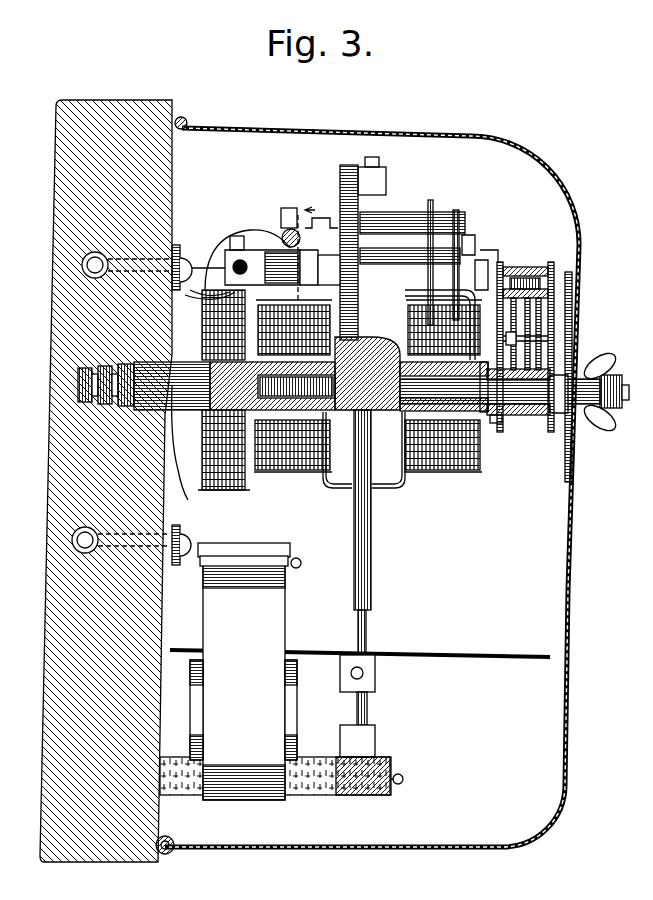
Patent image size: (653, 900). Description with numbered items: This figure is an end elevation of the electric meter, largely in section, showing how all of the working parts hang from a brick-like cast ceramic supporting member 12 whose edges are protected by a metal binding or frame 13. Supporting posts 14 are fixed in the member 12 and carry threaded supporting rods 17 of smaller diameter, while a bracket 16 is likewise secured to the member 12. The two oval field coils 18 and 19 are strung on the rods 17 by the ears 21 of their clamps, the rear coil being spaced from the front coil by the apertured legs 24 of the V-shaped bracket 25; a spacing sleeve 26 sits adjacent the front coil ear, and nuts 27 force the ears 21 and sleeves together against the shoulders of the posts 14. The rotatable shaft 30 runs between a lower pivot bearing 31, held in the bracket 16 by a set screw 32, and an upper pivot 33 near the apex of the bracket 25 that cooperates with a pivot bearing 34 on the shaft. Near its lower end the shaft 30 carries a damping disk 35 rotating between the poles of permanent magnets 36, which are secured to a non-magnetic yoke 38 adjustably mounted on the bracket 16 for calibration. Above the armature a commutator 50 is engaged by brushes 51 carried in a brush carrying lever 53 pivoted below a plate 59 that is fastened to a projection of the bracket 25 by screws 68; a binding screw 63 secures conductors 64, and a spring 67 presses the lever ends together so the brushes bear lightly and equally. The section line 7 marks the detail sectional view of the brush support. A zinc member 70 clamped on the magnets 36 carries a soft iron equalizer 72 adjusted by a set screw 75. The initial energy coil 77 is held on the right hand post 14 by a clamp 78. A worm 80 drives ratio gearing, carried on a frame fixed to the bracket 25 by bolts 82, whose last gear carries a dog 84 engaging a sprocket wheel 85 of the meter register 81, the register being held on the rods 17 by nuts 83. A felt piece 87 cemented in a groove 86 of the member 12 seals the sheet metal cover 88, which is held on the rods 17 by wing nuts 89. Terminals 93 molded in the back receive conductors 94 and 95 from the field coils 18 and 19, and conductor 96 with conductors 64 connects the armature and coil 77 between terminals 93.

The section line 7 is at (301, 253).
The ceramic supporting member 12 is at (62, 173).
The metal binding or frame 13 is at (125, 101).
The supporting posts 14 is at (192, 362).
The bracket 16 is at (316, 760).
The supporting rods 17 is at (505, 416).
The rear field coil 18 is at (302, 471).
The front field coil 19 is at (435, 472).
The ears 21 is at (344, 420).
The legs of V-shaped bracket 24 is at (388, 358).
The V-shaped bracket 25 is at (340, 172).
The spacing sleeve 26 is at (486, 418).
The nuts 27 is at (498, 422).
The shaft 30 is at (372, 555).
The lower pivot bearing 31 is at (376, 748).
The set screw 32 is at (404, 776).
The upper pivot 33 is at (388, 190).
The pivot bearing 34 is at (390, 222).
The damping disk 35 is at (448, 659).
The permanent magnets 36 is at (244, 680).
The non-magnetic yoke 38 is at (292, 705).
The commutator 50 is at (385, 268).
The brushes 51 is at (329, 258).
The brush carrying lever 53 is at (268, 242).
The plate 59 is at (284, 210).
The binding screw 63 is at (308, 255).
The conductors 64 is at (186, 260).
The spring 67 is at (230, 240).
The screws 68 is at (320, 216).
The non-magnetic member 70 is at (256, 556).
The magnetic equalizer 72 is at (230, 544).
The set screw 75 is at (300, 562).
The initial energy coil 77 is at (208, 322).
The clamp 78 is at (230, 490).
The worm 80 is at (430, 220).
The meter register 81 is at (573, 320).
The bolts 82 is at (470, 240).
The nuts 83 is at (578, 420).
The dog 84 is at (490, 255).
The sprocket wheel 85 is at (505, 265).
The groove 86 is at (162, 857).
The felt piece 87 is at (175, 840).
The sheet metal cover 88 is at (570, 584).
The wing nuts 89 is at (612, 368).
The metallic terminals 93 is at (182, 250).
The conductor 94 is at (410, 292).
The conductor 95 is at (210, 298).
The conductor 96 is at (180, 480).